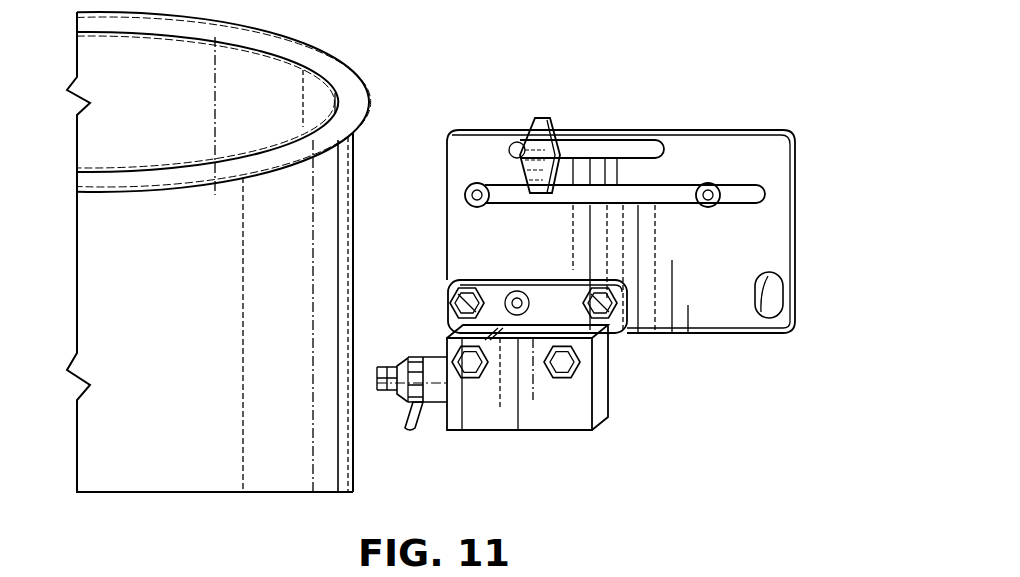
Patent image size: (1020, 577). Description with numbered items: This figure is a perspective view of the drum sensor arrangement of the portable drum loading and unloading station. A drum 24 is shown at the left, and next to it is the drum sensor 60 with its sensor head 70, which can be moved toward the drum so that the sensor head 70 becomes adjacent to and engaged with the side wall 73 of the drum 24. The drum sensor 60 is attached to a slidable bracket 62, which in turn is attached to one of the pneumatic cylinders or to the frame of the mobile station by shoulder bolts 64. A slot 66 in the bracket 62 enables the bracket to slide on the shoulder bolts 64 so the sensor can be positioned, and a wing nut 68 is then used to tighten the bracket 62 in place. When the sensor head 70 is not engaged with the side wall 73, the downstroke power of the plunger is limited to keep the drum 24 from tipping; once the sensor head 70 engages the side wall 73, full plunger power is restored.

The drum 24 is at (176, 340).
The side wall 73 is at (353, 157).
The sensor head 70 is at (352, 378).
The slidable bracket 62 is at (800, 255).
The slot 66 is at (590, 193).
The shoulder bolts 64 is at (718, 193).
The wing nut 68 is at (560, 120).
The drum sensor 60 is at (575, 417).